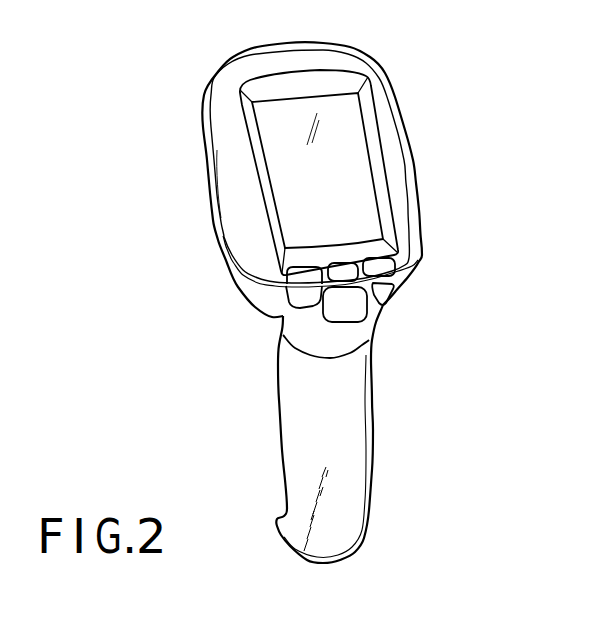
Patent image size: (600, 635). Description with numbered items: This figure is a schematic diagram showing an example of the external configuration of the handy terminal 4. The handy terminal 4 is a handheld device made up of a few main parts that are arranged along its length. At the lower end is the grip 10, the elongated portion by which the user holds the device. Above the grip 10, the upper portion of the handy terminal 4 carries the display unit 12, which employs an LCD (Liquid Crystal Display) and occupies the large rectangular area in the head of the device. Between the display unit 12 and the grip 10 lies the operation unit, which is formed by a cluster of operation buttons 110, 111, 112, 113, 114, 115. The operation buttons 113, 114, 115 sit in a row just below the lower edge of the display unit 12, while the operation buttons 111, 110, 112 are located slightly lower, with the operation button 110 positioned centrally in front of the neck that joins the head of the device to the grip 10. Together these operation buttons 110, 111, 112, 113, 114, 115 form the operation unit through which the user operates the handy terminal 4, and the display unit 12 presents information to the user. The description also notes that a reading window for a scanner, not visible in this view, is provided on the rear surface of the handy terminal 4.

The handy terminal 4 is at (443, 82).
The grip 10 is at (357, 460).
The display unit 12 is at (358, 150).
The operation button 110 is at (358, 310).
The operation button 111 is at (307, 298).
The operation button 112 is at (383, 287).
The operation button 113 is at (307, 273).
The operation button 114 is at (345, 267).
The operation button 115 is at (380, 263).